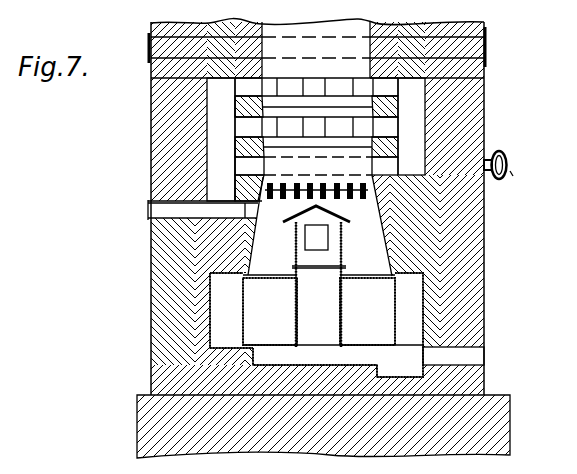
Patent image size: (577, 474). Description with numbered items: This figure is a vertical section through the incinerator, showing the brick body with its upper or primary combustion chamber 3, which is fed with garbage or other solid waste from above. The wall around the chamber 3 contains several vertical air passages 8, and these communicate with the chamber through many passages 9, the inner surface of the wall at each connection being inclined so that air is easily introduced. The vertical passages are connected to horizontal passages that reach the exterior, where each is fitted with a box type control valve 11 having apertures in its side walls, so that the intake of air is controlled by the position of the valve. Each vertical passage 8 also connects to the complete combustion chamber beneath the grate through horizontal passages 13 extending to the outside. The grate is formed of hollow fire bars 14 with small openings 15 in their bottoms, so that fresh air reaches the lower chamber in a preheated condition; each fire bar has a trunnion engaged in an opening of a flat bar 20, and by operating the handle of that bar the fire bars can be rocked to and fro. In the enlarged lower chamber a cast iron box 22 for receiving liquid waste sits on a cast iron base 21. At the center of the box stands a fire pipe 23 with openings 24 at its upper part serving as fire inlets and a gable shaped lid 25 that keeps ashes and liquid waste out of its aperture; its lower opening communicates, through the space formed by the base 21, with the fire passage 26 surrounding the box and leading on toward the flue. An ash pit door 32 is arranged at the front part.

The primary combustion chamber 3 is at (316, 50).
The vertical air passage 8 is at (316, 139).
The passage 9 is at (316, 139).
The box type control valve 11 is at (149, 45).
The horizontal passage 13 is at (150, 222).
The fire bar 14 is at (351, 184).
The small opening 15 is at (357, 201).
The flat bar 20 is at (516, 135).
The cast iron base 21 is at (300, 364).
The cast iron box 22 is at (319, 310).
The fire pipe 23 is at (333, 335).
The opening 24 is at (317, 240).
The gable shaped lid 25 is at (332, 214).
The fire passage 26 is at (316, 310).
The ash pit door 32 is at (486, 346).